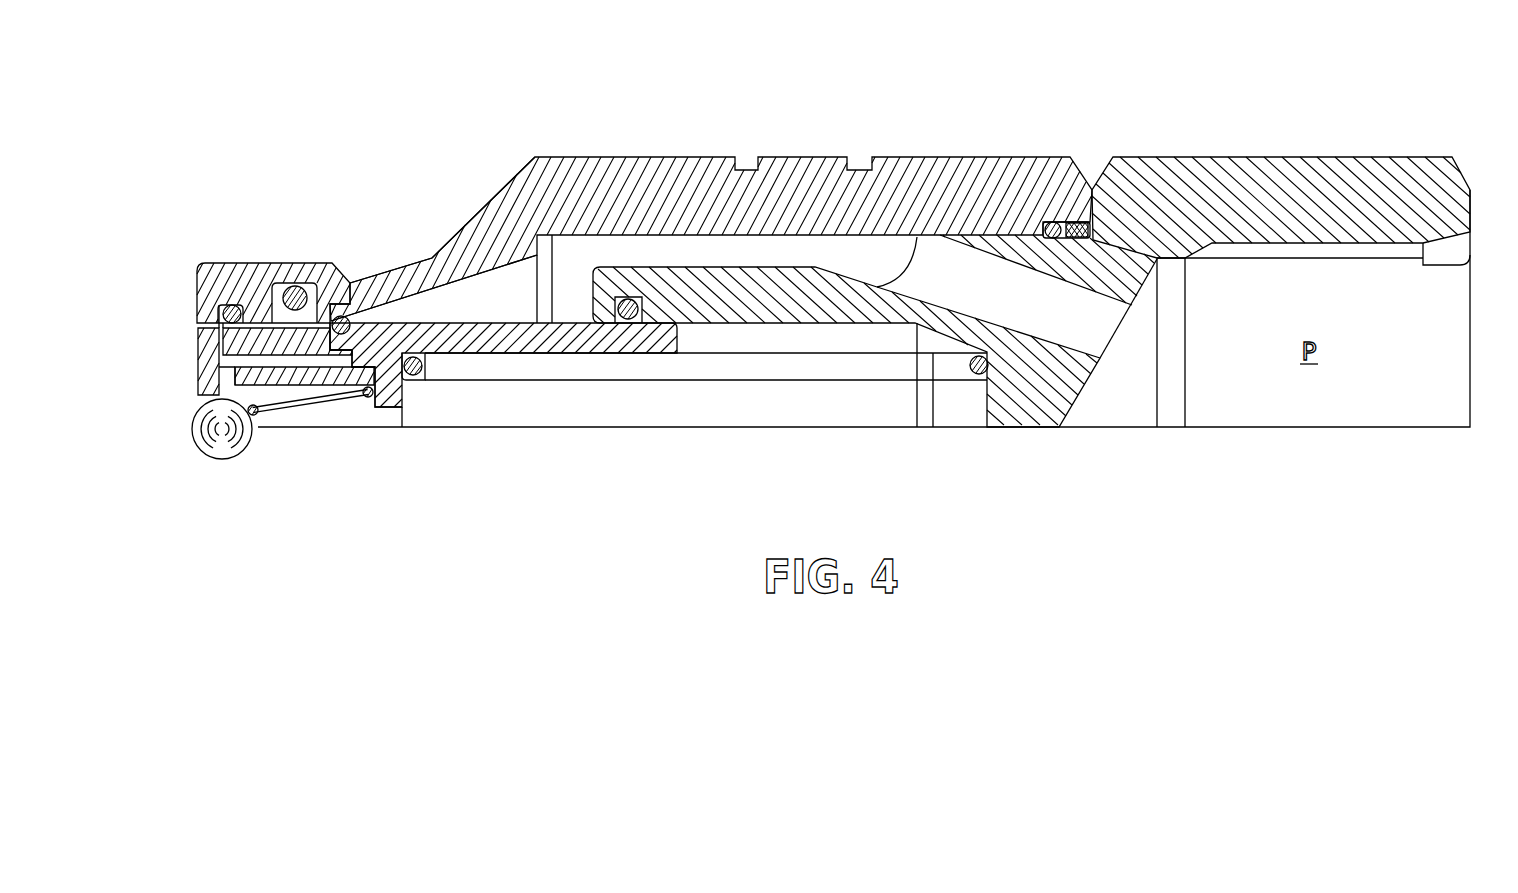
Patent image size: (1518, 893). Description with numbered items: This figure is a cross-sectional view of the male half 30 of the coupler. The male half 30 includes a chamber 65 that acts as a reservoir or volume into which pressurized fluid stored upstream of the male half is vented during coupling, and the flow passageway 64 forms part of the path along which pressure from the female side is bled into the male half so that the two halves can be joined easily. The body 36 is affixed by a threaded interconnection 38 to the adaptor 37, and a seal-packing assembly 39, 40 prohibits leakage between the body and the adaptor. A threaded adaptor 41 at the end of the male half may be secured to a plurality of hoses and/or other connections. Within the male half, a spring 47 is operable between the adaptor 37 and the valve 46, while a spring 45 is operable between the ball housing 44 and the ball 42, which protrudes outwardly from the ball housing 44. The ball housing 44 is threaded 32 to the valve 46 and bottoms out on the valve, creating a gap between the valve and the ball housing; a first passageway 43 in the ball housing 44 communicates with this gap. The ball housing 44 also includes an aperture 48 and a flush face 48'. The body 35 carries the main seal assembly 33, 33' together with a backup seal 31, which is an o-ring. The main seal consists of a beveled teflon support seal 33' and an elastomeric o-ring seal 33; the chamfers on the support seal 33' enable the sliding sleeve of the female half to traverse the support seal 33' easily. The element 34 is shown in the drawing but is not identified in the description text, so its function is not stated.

The male half 30 is at (793, 117).
The backup seal 31 is at (228, 305).
The threaded interconnection 32 is at (267, 357).
The main seal 33 is at (300, 236).
The support seal 33' is at (365, 218).
The end cap 34 is at (370, 283).
The body 35 is at (510, 228).
The body 36 is at (613, 272).
The adaptor 37 is at (693, 273).
The threaded interconnection 38 is at (997, 230).
The seal-packing assembly 39 is at (1053, 222).
The seal-packing assembly 40 is at (1076, 222).
The threaded adaptor 41 is at (1347, 252).
The ball 42 is at (222, 432).
The first passageway 43 is at (251, 390).
The ball housing 44 is at (307, 372).
The spring 45 is at (368, 398).
The valve 46 is at (445, 340).
The spring 47 is at (977, 365).
The aperture 48 is at (203, 429).
The flush face 48' is at (194, 347).
The flow passageway 64 is at (798, 259).
The chamber 65 is at (783, 414).